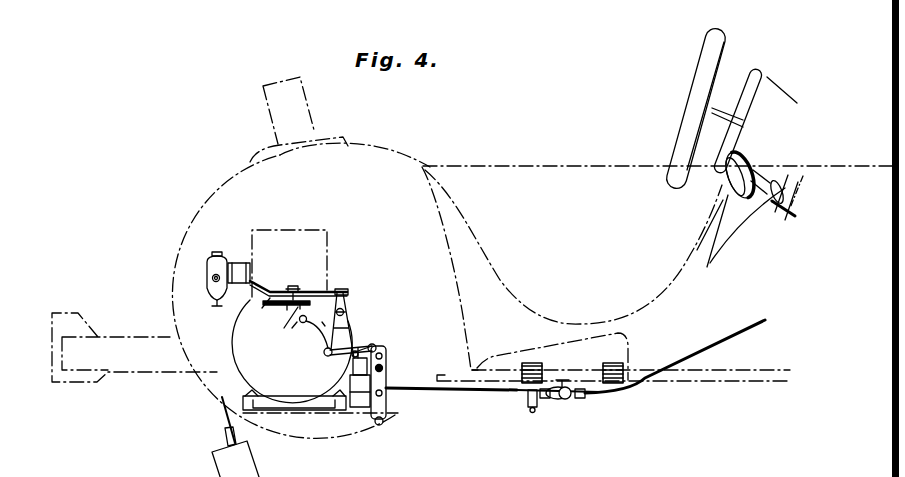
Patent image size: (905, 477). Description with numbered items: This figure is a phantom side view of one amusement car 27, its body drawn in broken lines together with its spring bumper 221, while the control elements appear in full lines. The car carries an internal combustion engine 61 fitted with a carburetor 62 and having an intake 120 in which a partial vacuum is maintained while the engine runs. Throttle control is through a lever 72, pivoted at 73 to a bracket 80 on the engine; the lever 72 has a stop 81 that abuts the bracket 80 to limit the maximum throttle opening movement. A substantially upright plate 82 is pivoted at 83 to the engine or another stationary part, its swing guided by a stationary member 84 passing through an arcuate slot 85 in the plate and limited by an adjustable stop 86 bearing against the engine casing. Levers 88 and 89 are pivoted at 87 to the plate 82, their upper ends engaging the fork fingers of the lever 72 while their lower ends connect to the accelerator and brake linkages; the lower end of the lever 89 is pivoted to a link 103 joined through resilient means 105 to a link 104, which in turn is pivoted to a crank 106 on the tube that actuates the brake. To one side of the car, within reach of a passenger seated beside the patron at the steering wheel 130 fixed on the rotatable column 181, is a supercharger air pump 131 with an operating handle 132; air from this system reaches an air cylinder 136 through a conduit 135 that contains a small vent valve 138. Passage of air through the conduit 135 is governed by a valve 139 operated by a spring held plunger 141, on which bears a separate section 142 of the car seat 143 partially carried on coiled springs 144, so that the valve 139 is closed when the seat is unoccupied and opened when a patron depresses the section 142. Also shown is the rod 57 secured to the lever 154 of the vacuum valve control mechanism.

The car 27 is at (499, 162).
The spring bumper 221 is at (77, 386).
The intake of the engine 120 is at (239, 268).
The carburetor 62 is at (207, 272).
The internal combustion engine 61 is at (328, 233).
The lever 72 is at (252, 283).
The pivot 73 is at (294, 286).
The bracket 80 is at (290, 306).
The stop 81 is at (262, 309).
The lever 88 is at (338, 292).
The lever 89 is at (342, 310).
The pivot 87 is at (346, 346).
The adjustable stop 86 is at (358, 352).
The upright plate 82 is at (324, 353).
The stationary member 84 is at (284, 328).
The arcuate slot 85 is at (297, 322).
The pivot 83 is at (322, 322).
The link 103 is at (357, 350).
The air cylinder 136 is at (365, 408).
The crank 106 is at (388, 362).
The resilient means 105 is at (375, 347).
The link 104 is at (384, 349).
The conduit 135 is at (434, 392).
The coiled springs 144 is at (520, 387).
The vent valve 138 is at (532, 412).
The spring held plunger 141 is at (553, 397).
The valve 139 is at (569, 396).
The seat section 142 is at (630, 340).
The car seat 143 is at (522, 340).
The steering wheel 130 is at (683, 123).
The column 181 is at (718, 107).
The operating handle 132 is at (727, 185).
The supercharger air pump 131 is at (793, 189).
The rod 57 is at (225, 413).
The lever 154 is at (226, 438).